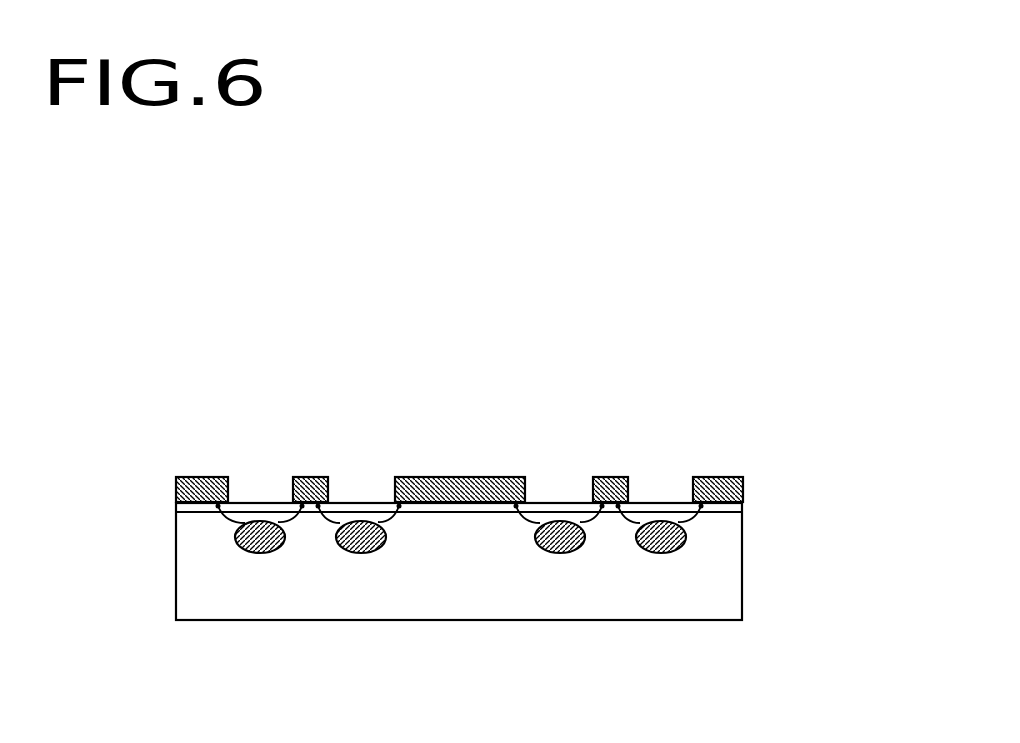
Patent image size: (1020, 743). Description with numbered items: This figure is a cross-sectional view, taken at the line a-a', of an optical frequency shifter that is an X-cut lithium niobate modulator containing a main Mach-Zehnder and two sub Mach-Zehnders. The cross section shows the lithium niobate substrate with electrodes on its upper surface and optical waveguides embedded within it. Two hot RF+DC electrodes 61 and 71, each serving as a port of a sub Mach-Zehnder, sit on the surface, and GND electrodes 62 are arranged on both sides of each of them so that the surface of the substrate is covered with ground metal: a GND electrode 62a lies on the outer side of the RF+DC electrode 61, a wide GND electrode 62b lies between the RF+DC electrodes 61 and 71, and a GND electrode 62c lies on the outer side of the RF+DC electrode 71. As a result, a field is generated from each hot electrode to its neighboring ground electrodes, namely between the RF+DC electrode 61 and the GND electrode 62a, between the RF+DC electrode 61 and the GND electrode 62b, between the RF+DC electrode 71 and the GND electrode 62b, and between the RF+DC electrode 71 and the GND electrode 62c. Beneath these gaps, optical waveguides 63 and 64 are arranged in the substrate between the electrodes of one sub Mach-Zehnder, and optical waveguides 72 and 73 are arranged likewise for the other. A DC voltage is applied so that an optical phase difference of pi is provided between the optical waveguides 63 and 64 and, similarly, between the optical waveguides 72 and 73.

The RF+DC electrode 61 is at (613, 477).
The GND electrode 62 is at (746, 490).
The GND electrode 62a is at (715, 477).
The GND electrode 62b is at (458, 477).
The GND electrode 62c is at (198, 477).
The optical waveguide 63 is at (658, 553).
The optical waveguide 64 is at (552, 553).
The RF+DC electrode 71 is at (313, 477).
The optical waveguide 72 is at (363, 553).
The optical waveguide 73 is at (246, 553).